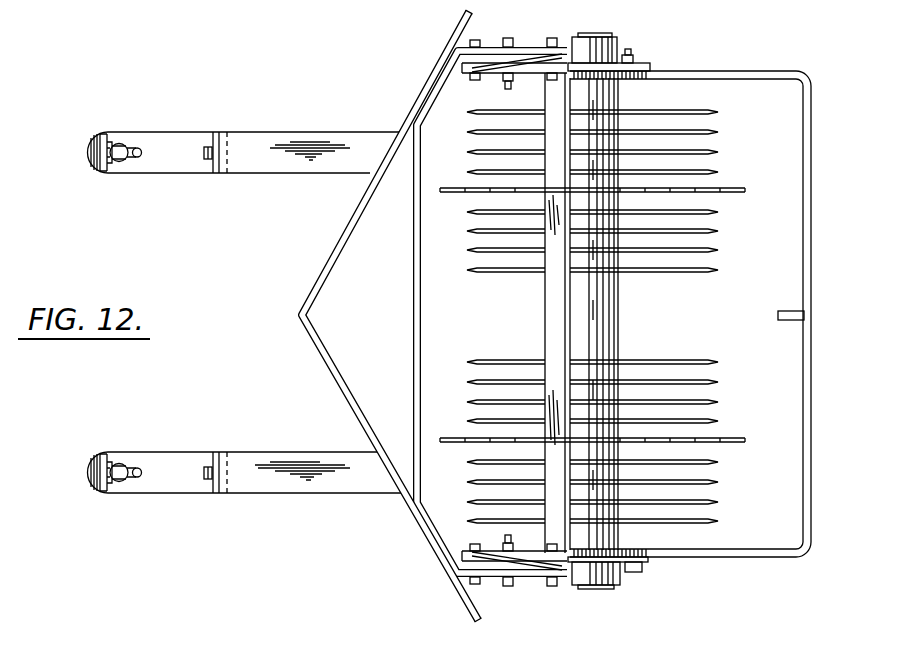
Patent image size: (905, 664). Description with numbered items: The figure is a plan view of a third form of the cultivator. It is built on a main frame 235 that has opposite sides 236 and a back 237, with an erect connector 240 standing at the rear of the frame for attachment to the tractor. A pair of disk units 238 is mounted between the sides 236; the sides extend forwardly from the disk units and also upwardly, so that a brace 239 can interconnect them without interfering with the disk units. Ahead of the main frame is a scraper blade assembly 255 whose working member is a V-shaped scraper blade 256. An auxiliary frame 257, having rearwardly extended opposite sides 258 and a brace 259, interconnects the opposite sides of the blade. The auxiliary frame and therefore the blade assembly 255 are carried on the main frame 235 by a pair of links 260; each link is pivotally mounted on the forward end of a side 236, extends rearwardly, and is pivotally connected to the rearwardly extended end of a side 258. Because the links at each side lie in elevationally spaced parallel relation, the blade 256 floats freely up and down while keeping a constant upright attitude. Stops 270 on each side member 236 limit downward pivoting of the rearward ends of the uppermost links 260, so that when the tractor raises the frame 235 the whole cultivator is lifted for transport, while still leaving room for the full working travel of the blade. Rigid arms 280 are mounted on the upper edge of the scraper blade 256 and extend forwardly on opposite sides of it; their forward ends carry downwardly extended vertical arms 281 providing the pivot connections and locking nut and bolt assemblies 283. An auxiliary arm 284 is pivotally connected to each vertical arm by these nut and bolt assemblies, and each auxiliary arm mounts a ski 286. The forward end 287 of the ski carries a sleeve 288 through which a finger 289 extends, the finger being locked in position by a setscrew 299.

The main frame 235 is at (824, 389).
The opposite sides 236 is at (695, 72).
The back 237 is at (811, 262).
The disk units 238 is at (725, 161).
The brace 239 is at (553, 296).
The erect connector 240 is at (789, 311).
The scraper blade assembly 255 is at (297, 351).
The V-shaped scraper blade 256 is at (343, 393).
The auxiliary frame 257 is at (407, 347).
The opposite sides 258 is at (522, 47).
The brace 259 is at (422, 296).
The links 260 is at (500, 62).
The stops 270 is at (505, 86).
The rigid arms 280 is at (303, 142).
The vertical arms 281 is at (232, 174).
The locking nut and bolt assemblies 283 is at (214, 148).
The auxiliary arm 284 is at (214, 175).
The ski 286 is at (170, 140).
The forward end 287 is at (90, 148).
The sleeve 288 is at (120, 140).
The finger 289 is at (131, 155).
The setscrew 299 is at (92, 162).